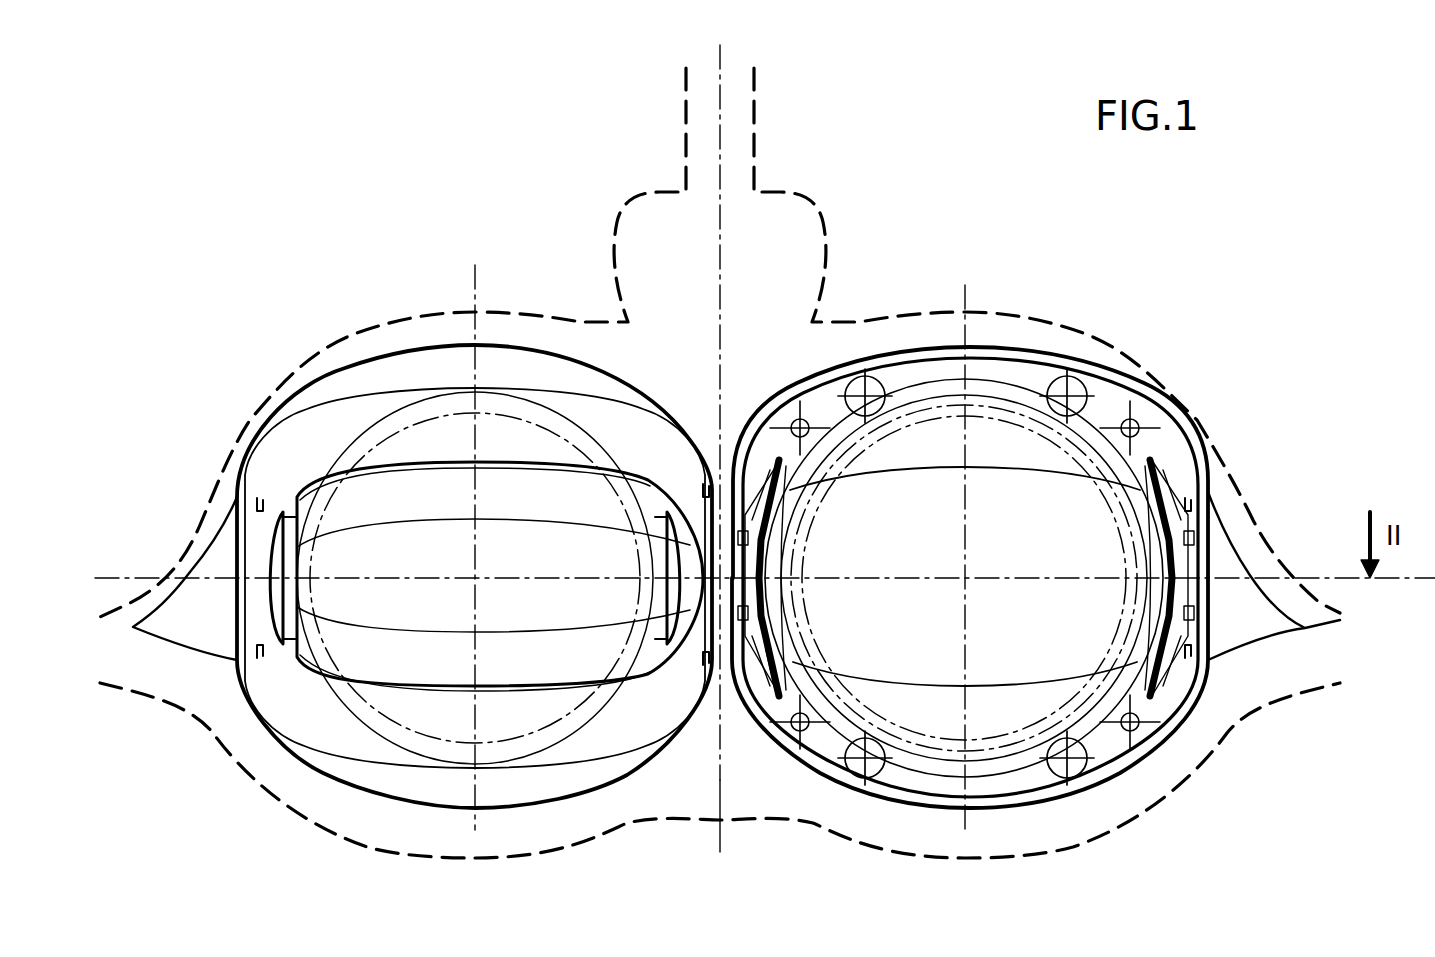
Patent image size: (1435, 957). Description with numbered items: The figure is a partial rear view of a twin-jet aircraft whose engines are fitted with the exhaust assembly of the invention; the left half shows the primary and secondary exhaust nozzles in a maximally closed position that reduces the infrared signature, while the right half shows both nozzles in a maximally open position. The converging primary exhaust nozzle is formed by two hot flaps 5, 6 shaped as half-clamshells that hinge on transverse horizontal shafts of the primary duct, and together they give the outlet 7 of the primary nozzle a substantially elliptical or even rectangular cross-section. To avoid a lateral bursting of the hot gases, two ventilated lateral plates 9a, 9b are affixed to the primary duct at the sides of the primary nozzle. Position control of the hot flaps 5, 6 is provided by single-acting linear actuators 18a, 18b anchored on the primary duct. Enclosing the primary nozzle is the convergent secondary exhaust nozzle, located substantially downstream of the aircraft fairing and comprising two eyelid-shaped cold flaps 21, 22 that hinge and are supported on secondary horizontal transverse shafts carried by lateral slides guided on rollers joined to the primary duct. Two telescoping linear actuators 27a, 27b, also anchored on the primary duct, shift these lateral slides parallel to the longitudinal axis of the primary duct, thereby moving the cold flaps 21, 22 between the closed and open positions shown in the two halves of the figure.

The hot flap 5 is at (393, 506).
The hot flap 6 is at (598, 655).
The outlet 7 is at (513, 565).
The ventilated lateral plate 9a is at (278, 603).
The ventilated lateral plate 9b is at (698, 572).
The single-acting linear actuator 18a is at (868, 393).
The single-acting linear actuator 18b is at (1068, 388).
The cold flap 21 is at (390, 380).
The cold flap 22 is at (366, 778).
The telescoping linear actuator 27a is at (1192, 558).
The telescoping linear actuator 27b is at (765, 567).